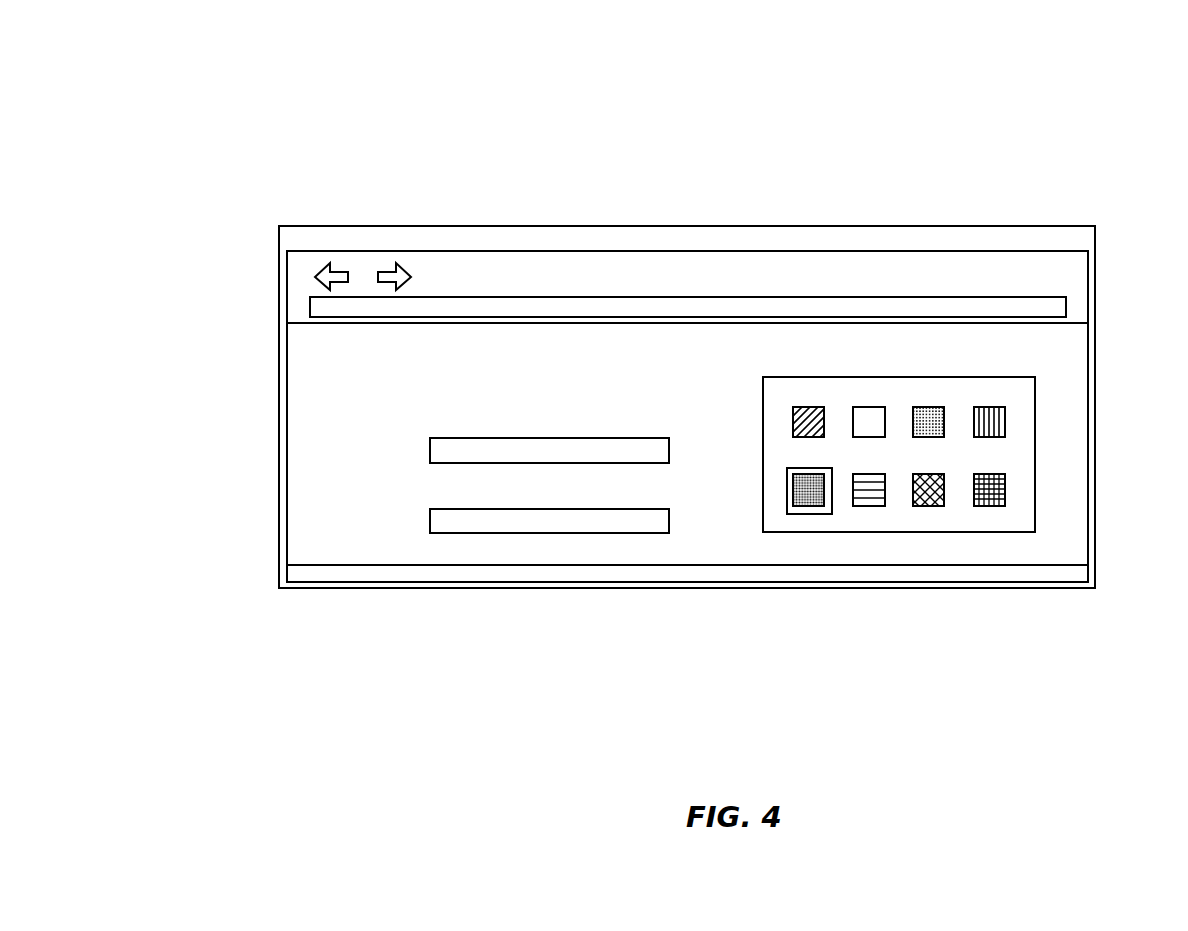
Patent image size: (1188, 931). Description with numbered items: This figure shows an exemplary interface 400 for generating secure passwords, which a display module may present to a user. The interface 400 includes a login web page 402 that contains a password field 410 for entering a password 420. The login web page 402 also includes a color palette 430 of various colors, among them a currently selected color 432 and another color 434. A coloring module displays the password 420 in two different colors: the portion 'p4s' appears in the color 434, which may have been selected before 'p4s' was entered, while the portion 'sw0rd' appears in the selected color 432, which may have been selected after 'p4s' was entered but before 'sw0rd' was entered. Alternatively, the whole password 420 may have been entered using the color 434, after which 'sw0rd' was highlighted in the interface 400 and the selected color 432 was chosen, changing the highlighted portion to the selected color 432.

The interface 400 is at (206, 102).
The login web page 402 is at (538, 323).
The password field 410 is at (613, 533).
The password 420 is at (467, 533).
The color palette 430 is at (883, 378).
The selected color 432 is at (809, 507).
The color 434 is at (990, 507).